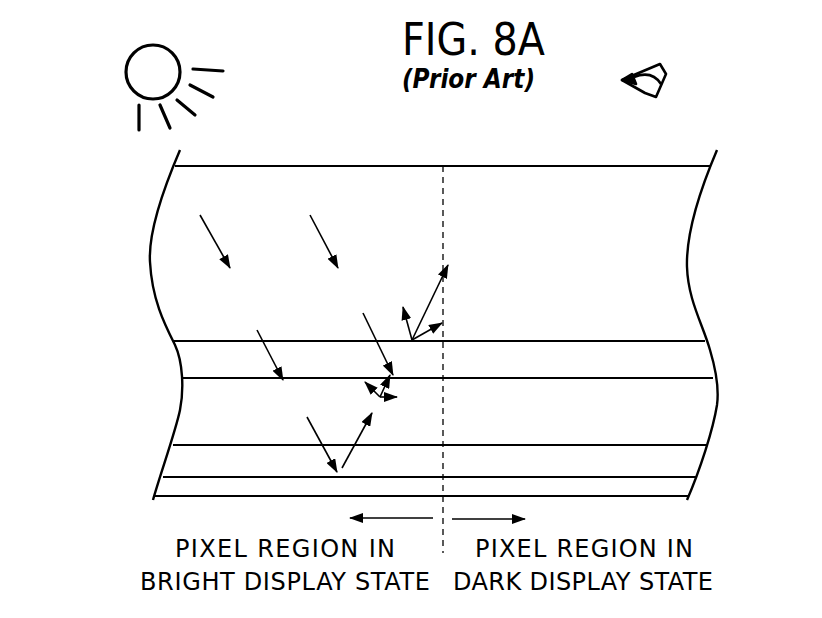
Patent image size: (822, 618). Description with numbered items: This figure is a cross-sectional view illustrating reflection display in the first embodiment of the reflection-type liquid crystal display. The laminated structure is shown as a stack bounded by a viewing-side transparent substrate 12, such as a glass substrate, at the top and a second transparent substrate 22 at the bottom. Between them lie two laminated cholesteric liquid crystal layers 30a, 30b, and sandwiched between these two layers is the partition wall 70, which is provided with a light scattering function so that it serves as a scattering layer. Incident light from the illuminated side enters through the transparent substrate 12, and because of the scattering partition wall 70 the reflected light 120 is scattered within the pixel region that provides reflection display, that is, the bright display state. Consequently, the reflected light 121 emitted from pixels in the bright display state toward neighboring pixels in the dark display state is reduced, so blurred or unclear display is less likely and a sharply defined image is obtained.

The transparent substrate 12 is at (658, 247).
The liquid crystal layer 30a is at (695, 360).
The partition wall 70 is at (695, 408).
The liquid crystal layer 30b is at (675, 458).
The transparent substrate 22 is at (675, 485).
The reflected light 121 is at (432, 300).
The reflected light 120 is at (355, 437).